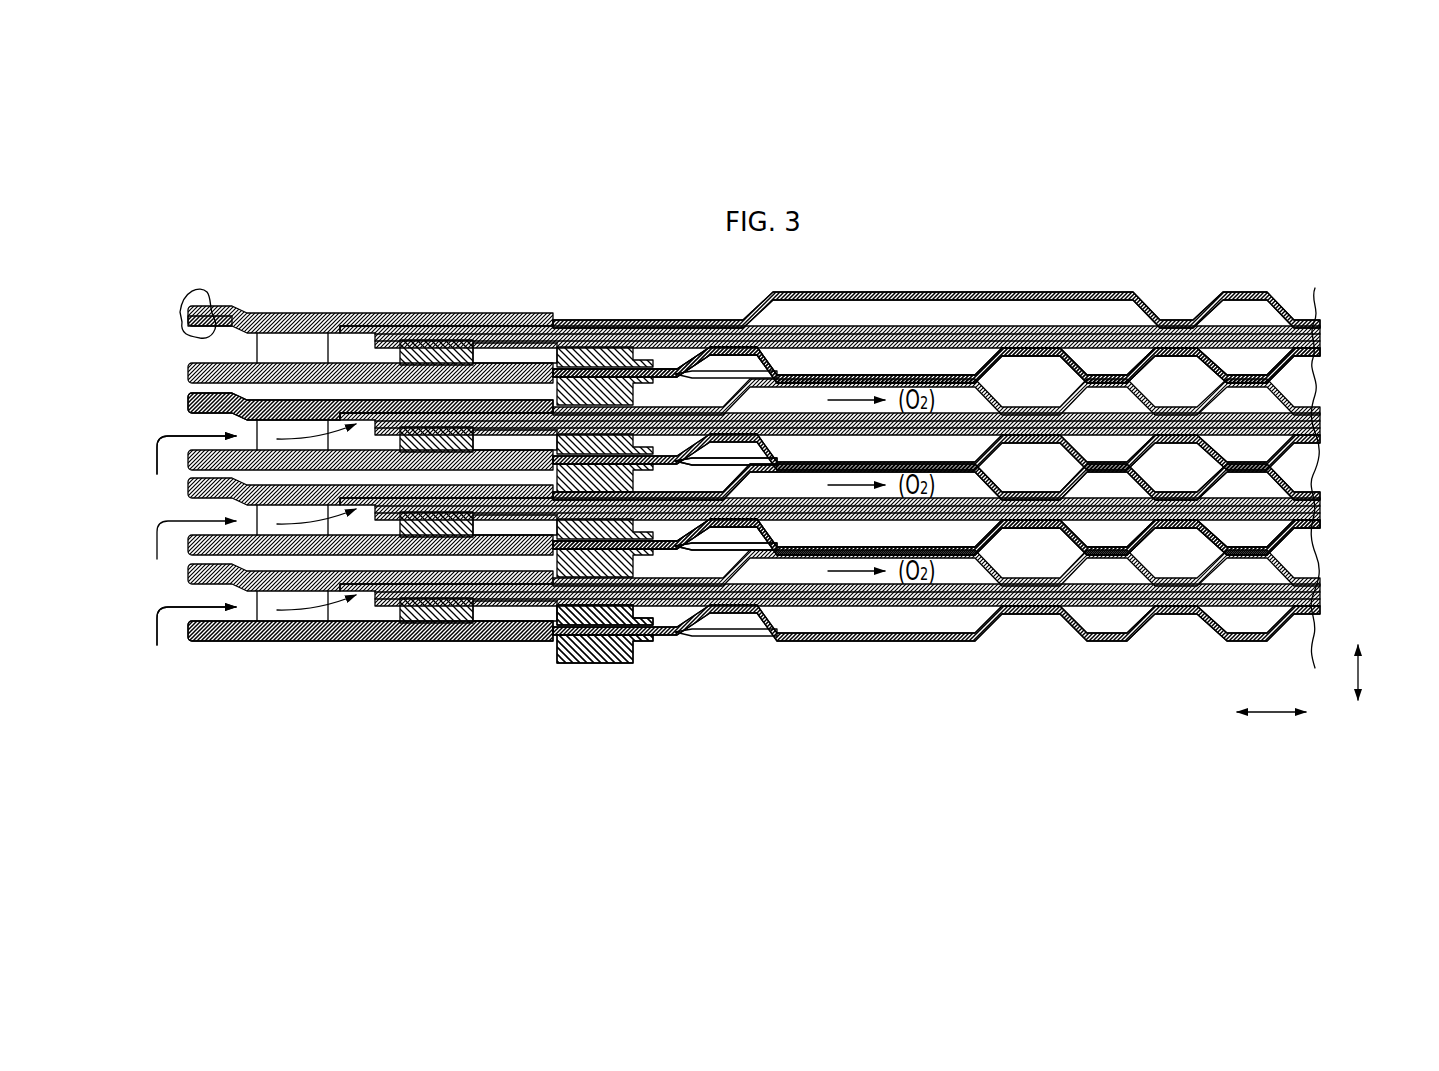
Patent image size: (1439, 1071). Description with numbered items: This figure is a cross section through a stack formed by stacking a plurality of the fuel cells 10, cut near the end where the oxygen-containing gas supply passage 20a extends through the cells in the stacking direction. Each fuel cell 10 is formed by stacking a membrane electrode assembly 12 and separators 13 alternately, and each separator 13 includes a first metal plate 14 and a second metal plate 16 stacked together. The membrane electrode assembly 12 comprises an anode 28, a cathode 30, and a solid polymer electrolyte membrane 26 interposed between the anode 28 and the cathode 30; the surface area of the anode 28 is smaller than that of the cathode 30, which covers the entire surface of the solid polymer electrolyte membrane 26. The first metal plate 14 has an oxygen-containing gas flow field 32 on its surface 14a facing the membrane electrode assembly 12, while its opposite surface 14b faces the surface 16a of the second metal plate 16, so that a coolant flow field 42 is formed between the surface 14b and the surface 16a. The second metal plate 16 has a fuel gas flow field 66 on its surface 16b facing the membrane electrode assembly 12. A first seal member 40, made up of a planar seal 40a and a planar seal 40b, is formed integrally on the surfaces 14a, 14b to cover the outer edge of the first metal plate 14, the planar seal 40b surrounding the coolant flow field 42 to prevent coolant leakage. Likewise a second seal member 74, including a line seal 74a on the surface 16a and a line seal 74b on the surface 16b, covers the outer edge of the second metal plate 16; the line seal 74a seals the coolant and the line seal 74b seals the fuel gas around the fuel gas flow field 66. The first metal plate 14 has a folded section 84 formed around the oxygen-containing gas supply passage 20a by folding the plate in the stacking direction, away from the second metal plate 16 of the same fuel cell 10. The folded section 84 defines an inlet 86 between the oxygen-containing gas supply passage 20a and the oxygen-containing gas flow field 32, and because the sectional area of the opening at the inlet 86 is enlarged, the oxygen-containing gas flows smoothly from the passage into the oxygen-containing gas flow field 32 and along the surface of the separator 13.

The fuel cell 10 is at (1046, 245).
The membrane electrode assembly 12 is at (885, 356).
The separator 13 is at (1375, 443).
The first metal plate 14 is at (1302, 478).
The surface 14a is at (708, 630).
The surface 14b is at (727, 577).
The second metal plate 16 is at (1302, 538).
The surface 16a is at (679, 406).
The surface 16b is at (690, 369).
The oxygen-containing gas supply passage 20a is at (188, 656).
The solid polymer electrolyte membrane 26 is at (1322, 337).
The anode 28 is at (1322, 347).
The cathode 30 is at (1323, 322).
The oxygen-containing gas flow field 32 is at (1240, 308).
The first seal member 40 is at (130, 290).
The planar seal 40a is at (182, 332).
The planar seal 40b is at (174, 311).
The coolant flow field 42 is at (1178, 628).
The fuel gas flow field 66 is at (1297, 368).
The second seal member 74 is at (181, 622).
The line seal 74a is at (591, 663).
The line seal 74b is at (526, 642).
The folded section 84 is at (200, 401).
The inlet 86 is at (197, 431).